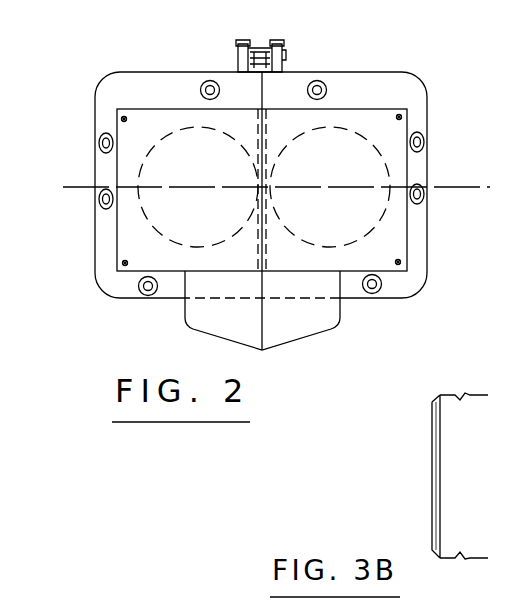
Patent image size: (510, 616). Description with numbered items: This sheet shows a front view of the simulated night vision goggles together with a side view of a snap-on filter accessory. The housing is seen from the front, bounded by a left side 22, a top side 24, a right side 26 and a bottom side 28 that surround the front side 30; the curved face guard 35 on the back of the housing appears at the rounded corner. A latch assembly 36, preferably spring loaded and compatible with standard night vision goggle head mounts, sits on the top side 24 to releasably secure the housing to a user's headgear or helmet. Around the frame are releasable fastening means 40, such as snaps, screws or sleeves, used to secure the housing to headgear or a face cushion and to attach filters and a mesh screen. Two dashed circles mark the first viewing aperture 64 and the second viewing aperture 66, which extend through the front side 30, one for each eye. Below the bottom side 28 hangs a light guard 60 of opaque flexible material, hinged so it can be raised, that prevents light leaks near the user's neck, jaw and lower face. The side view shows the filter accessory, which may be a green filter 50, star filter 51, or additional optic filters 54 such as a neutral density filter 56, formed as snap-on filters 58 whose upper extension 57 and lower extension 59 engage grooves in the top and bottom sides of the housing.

In FIG. 2, the left side 22 is at (116, 223).
In FIG. 2, the top side 24 is at (134, 110).
In FIG. 2, the right side 26 is at (428, 210).
In FIG. 2, the bottom side 28 is at (176, 272).
In FIG. 2, the front side 30 is at (392, 235).
In FIG. 2, the face guard 35 is at (108, 88).
In FIG. 2, the latch assembly 36 is at (259, 40).
In FIG. 2, the releasable fastening means 40 is at (188, 108).
In FIG. 2, the light guard 60 is at (287, 329).
In FIG. 2, the first viewing aperture 64 is at (182, 128).
In FIG. 2, the second viewing aperture 66 is at (355, 132).
In FIG. 3B, the green filter 50 is at (414, 477).
In FIG. 3B, the additional optic filters 54 is at (414, 477).
In FIG. 3B, the neutral density filter 56 is at (414, 477).
In FIG. 3B, the snap-on filters 58 is at (414, 477).
In FIG. 3B, the star filter 51 is at (414, 477).
In FIG. 3B, the upper extension 57 is at (464, 396).
In FIG. 3B, the lower extension 59 is at (464, 556).